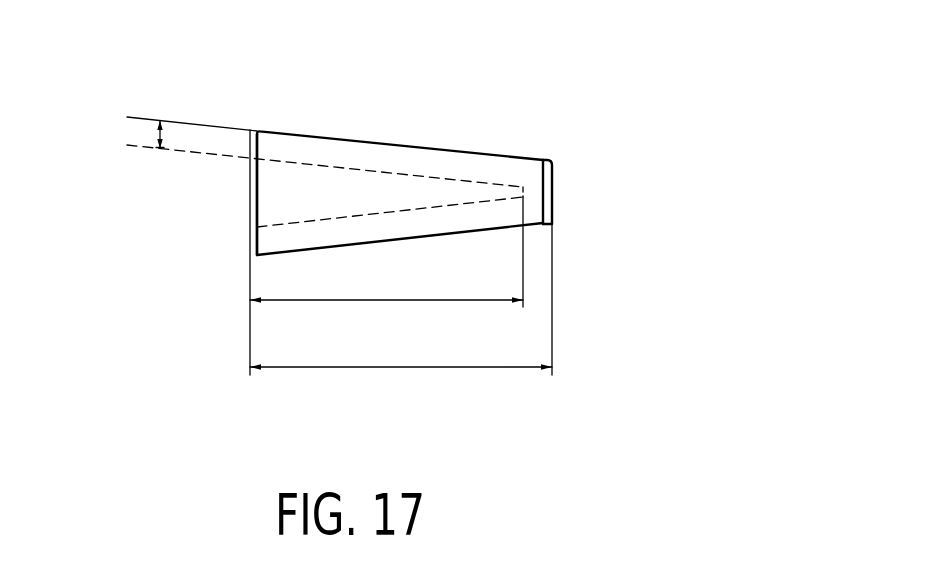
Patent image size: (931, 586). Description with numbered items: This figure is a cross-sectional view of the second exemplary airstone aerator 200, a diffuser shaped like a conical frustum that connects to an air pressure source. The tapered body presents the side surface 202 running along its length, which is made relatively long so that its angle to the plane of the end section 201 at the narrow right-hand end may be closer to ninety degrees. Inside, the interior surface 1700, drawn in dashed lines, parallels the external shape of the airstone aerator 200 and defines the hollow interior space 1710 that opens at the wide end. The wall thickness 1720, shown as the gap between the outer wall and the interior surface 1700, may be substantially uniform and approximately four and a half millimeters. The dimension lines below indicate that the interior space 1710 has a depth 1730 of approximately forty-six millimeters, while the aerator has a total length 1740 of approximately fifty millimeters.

The airstone aerator 200 is at (377, 141).
The end section 201 is at (555, 190).
The side surface 202 is at (493, 152).
The interior surface 1700 is at (388, 168).
The interior space 1710 is at (276, 190).
The thickness 1720 is at (157, 137).
The depth 1730 is at (387, 300).
The total length 1740 is at (400, 367).